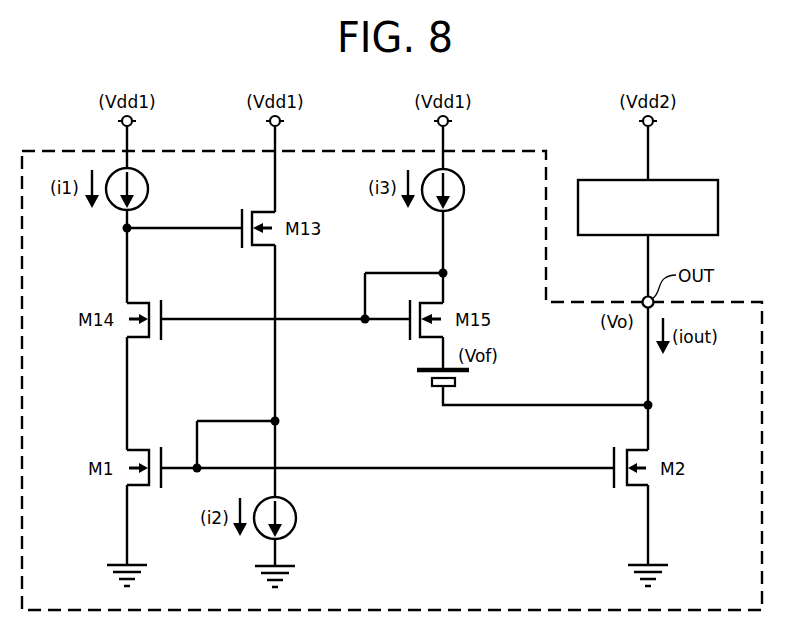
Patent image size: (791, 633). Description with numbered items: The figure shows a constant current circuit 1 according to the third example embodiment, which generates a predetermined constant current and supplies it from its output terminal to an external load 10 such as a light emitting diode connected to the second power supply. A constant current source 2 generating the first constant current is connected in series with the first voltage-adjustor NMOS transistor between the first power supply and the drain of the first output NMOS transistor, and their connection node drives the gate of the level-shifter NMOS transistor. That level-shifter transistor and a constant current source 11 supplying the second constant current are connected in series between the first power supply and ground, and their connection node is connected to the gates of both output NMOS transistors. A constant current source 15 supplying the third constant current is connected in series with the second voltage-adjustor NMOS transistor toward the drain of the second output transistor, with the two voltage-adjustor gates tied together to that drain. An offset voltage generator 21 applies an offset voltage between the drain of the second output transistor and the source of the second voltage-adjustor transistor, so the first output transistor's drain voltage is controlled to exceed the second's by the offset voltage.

The constant current circuit 1 is at (520, 137).
The constant current source 2 is at (149, 190).
The constant current source 15 is at (465, 191).
The constant current source 11 is at (297, 519).
The external load 10 is at (718, 208).
The offset voltage generator 21 is at (416, 382).